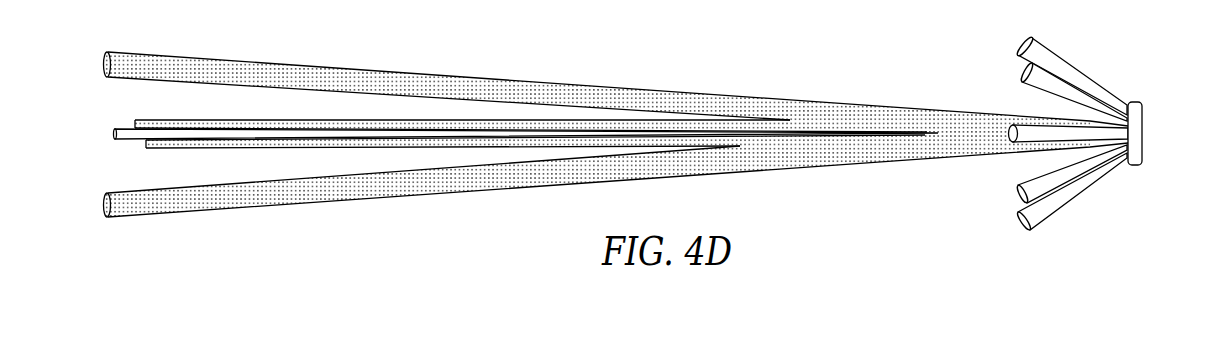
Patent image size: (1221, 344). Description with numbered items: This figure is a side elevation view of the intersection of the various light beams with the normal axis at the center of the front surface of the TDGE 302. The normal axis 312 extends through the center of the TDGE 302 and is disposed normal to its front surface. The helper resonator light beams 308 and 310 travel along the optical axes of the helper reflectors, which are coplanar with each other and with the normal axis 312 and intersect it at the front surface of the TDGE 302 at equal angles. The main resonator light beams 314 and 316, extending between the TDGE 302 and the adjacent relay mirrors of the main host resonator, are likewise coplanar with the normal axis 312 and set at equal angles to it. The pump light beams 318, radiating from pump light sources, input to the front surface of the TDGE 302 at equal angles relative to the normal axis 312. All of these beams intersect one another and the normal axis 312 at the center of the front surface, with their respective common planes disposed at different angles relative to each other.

The TDGE 302 is at (1143, 149).
The helper resonator light beam 308 is at (135, 124).
The helper resonator light beam 310 is at (146, 145).
The normal axis 312 is at (113, 134).
The main resonator light beam 314 is at (455, 82).
The main resonator light beam 316 is at (447, 190).
The pump light beams 318 is at (1055, 88).